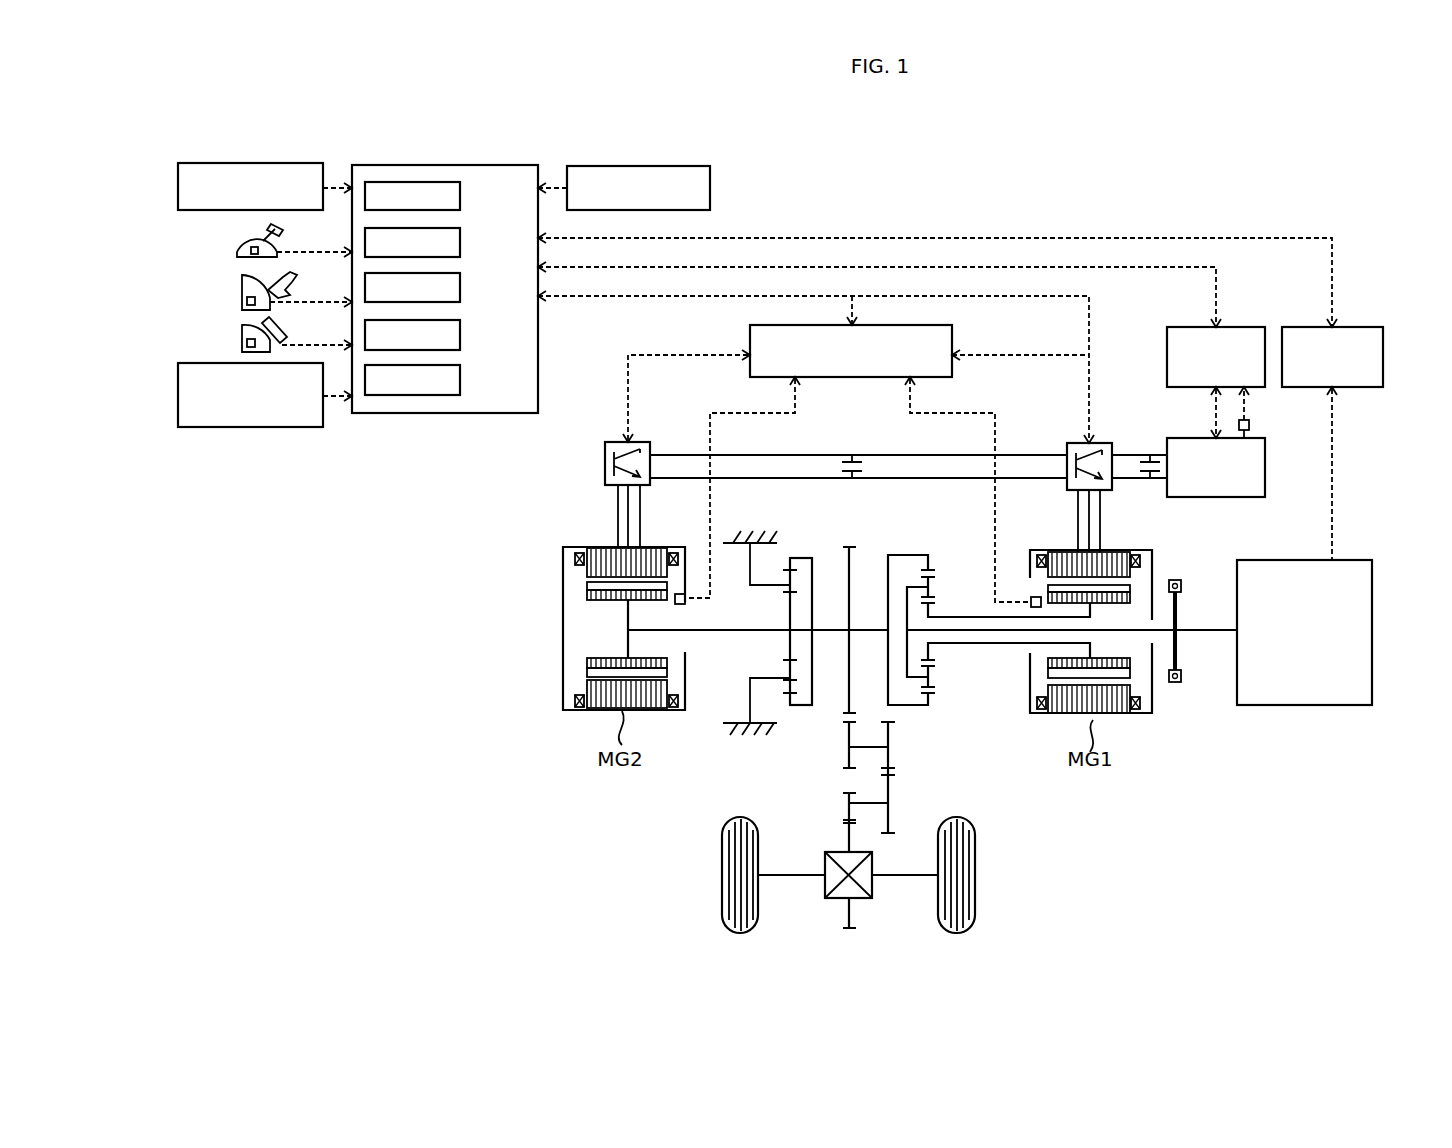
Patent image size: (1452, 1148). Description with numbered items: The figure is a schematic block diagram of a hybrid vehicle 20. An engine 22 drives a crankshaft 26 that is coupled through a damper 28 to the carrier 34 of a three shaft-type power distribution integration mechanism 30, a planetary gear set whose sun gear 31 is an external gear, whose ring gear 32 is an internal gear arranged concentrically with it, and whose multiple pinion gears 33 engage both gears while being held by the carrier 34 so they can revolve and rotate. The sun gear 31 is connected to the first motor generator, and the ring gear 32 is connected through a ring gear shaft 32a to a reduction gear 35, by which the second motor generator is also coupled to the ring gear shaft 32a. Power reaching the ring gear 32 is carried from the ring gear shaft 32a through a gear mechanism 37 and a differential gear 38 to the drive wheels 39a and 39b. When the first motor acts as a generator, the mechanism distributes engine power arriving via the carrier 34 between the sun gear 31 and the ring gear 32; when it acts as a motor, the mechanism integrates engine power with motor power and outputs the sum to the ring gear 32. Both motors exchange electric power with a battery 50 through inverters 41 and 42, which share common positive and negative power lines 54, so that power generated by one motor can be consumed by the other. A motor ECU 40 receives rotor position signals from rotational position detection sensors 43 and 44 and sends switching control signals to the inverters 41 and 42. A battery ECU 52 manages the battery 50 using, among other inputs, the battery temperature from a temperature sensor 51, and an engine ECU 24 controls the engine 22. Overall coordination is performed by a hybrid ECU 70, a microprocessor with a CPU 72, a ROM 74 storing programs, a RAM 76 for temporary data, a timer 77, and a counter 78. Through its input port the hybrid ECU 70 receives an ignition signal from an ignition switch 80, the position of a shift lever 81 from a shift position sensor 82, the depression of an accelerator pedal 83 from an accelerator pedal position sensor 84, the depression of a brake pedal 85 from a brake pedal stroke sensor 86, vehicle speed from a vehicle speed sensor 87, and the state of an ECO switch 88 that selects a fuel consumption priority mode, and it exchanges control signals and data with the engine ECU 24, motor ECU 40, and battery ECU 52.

The hybrid vehicle 20 is at (1354, 228).
The engine 22 is at (1383, 632).
The engine electronic control unit 24 is at (1357, 327).
The crankshaft 26 is at (1200, 634).
The damper 28 is at (1173, 684).
The power distribution integration mechanism 30 is at (989, 617).
The sun gear 31 is at (930, 653).
The ring gear 32 is at (930, 700).
The ring gear shaft 32a is at (829, 625).
The pinion gears 33 is at (930, 683).
The carrier 34 is at (903, 598).
The reduction gear 35 is at (797, 555).
The gear mechanism 37 is at (906, 792).
The differential gear 38 is at (833, 851).
The drive wheel 39a is at (722, 876).
The drive wheel 39b is at (975, 876).
The motor electronic control unit 40 is at (942, 325).
The inverter 41 is at (1112, 445).
The inverter 42 is at (651, 443).
The rotational position detection sensor 43 is at (1035, 597).
The rotational position detection sensor 44 is at (683, 593).
The battery 50 is at (1167, 493).
The temperature sensor 51 is at (1249, 425).
The battery electronic control unit 52 is at (1255, 327).
The power lines 54 is at (815, 472).
The hybrid electronic control unit 70 is at (449, 165).
The CPU 72 is at (460, 195).
The ROM 74 is at (460, 241).
The RAM 76 is at (460, 287).
The timer 77 is at (460, 334).
The counter 78 is at (460, 380).
The ignition switch 80 is at (178, 186).
The shift lever 81 is at (266, 236).
The shift position sensor 82 is at (237, 251).
The accelerator pedal 83 is at (272, 287).
The accelerator pedal position sensor 84 is at (242, 300).
The brake pedal 85 is at (272, 330).
The brake pedal stroke sensor 86 is at (242, 350).
The vehicle speed sensor 87 is at (178, 390).
The ECO switch 88 is at (710, 188).